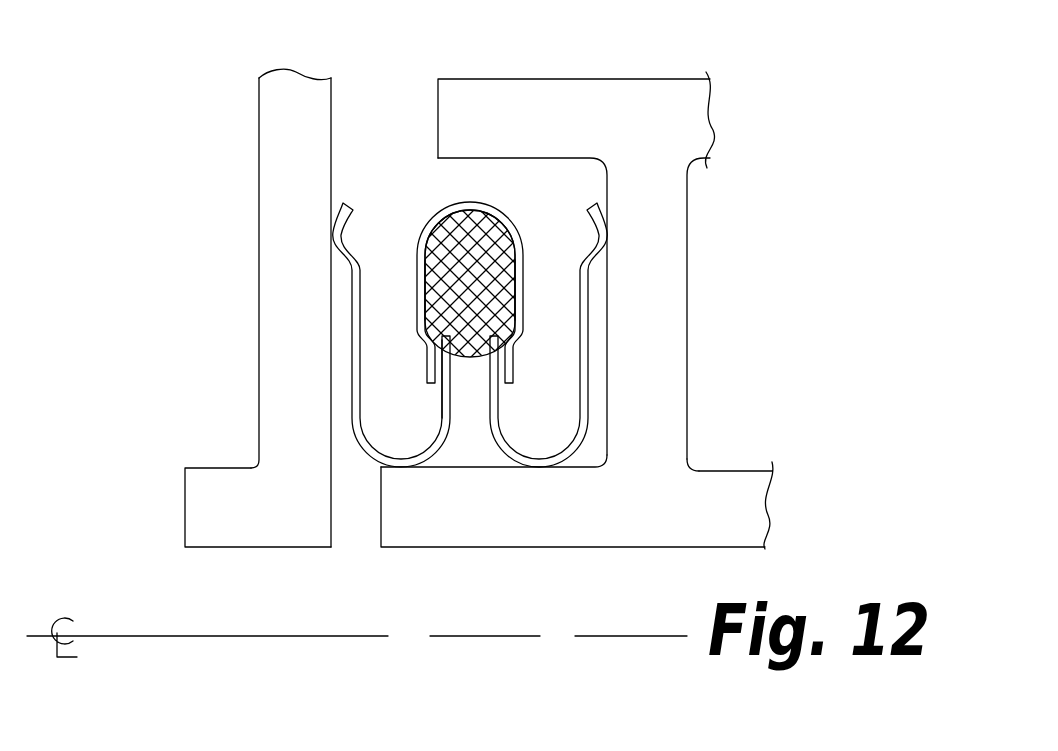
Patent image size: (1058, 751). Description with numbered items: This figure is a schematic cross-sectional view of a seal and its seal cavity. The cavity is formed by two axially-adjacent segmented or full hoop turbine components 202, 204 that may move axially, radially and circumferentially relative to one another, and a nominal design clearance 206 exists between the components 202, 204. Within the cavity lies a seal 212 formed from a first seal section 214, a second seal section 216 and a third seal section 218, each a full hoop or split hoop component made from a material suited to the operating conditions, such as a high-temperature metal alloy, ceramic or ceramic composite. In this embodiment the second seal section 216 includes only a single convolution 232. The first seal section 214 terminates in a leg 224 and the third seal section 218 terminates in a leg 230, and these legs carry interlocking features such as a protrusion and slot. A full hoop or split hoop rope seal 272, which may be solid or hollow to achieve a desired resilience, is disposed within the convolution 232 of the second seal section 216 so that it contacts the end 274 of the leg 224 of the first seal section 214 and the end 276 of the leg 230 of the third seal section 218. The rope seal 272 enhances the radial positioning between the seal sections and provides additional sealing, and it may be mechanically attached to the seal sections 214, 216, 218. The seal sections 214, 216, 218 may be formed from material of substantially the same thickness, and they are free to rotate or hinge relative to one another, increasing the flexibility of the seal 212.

The turbine component 202 is at (257, 547).
The turbine component 204 is at (638, 547).
The nominal design clearance 206 is at (332, 516).
The seal 212 is at (359, 80).
The first seal section 214 is at (350, 367).
The second seal section 216 is at (474, 192).
The third seal section 218 is at (590, 365).
The leg 224 is at (442, 412).
The leg 230 is at (498, 408).
The convolution 232 is at (428, 205).
The rope seal 272 is at (490, 225).
The end of leg 274 is at (423, 305).
The end of leg 276 is at (517, 307).